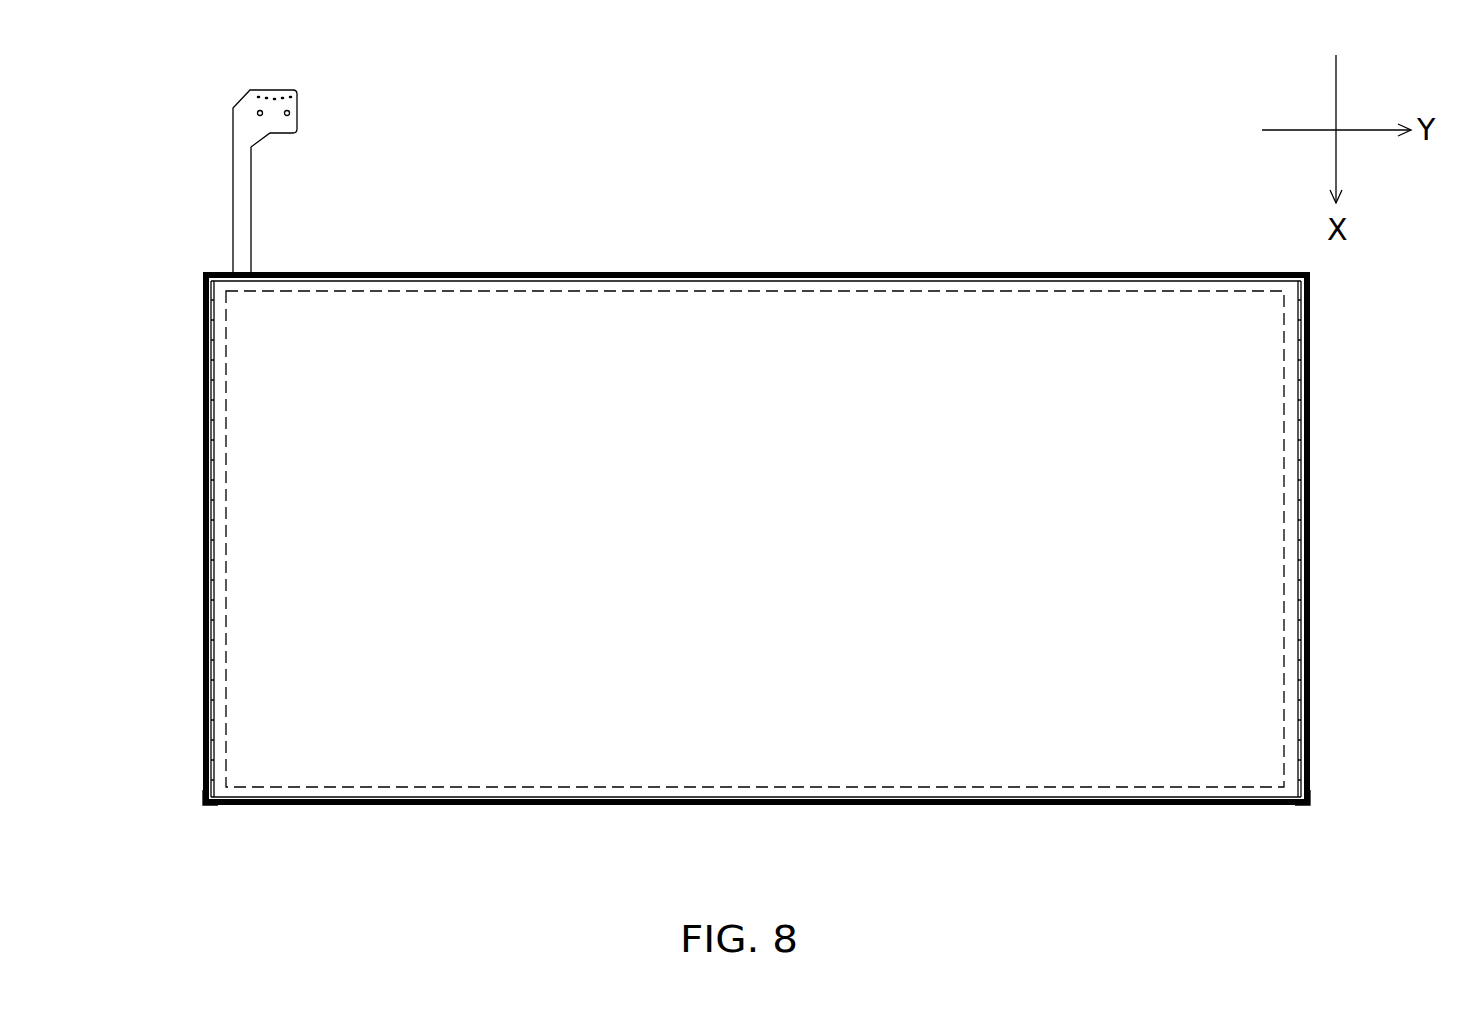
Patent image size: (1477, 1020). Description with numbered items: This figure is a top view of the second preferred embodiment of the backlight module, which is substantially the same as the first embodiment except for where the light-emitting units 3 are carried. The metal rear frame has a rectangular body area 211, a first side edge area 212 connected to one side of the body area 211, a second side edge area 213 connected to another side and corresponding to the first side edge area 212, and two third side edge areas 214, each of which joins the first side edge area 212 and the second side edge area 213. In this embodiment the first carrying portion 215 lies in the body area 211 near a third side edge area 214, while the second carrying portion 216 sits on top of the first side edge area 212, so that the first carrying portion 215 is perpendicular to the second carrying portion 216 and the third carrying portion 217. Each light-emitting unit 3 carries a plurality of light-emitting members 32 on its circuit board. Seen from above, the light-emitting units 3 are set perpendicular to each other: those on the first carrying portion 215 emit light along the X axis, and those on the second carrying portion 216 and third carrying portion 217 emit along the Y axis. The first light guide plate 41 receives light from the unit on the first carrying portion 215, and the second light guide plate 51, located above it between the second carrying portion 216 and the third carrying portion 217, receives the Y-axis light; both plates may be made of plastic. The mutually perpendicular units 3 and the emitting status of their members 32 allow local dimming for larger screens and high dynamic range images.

The light-emitting unit 3 is at (210, 183).
The light-emitting member 32 is at (207, 692).
The first light guide plate 41 is at (352, 317).
The second light guide plate 51 is at (740, 360).
The body area 211 is at (903, 288).
The first side edge area 212 is at (210, 814).
The second side edge area 213 is at (1310, 819).
The third side edge area 214 is at (1045, 270).
The first carrying portion 215 is at (598, 280).
The second carrying portion 216 is at (207, 452).
The third carrying portion 217 is at (1312, 423).